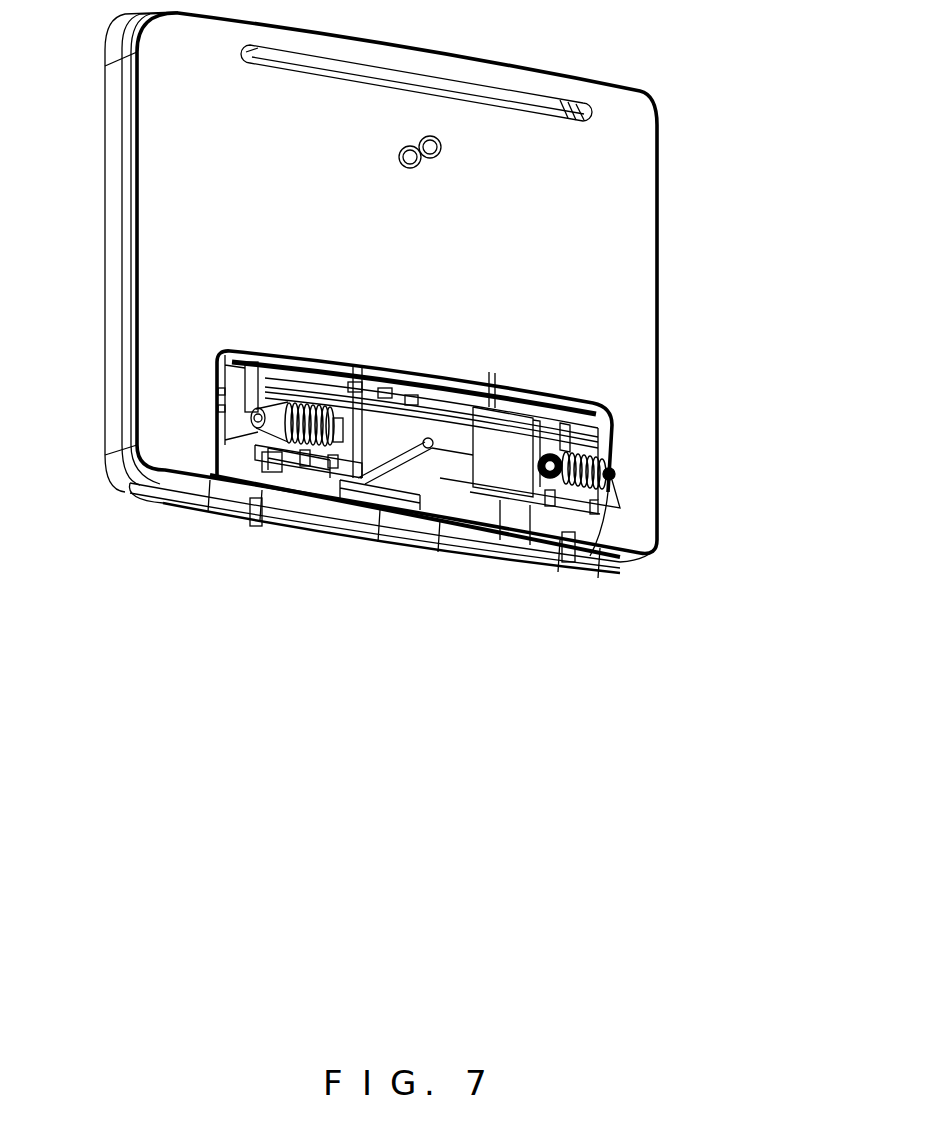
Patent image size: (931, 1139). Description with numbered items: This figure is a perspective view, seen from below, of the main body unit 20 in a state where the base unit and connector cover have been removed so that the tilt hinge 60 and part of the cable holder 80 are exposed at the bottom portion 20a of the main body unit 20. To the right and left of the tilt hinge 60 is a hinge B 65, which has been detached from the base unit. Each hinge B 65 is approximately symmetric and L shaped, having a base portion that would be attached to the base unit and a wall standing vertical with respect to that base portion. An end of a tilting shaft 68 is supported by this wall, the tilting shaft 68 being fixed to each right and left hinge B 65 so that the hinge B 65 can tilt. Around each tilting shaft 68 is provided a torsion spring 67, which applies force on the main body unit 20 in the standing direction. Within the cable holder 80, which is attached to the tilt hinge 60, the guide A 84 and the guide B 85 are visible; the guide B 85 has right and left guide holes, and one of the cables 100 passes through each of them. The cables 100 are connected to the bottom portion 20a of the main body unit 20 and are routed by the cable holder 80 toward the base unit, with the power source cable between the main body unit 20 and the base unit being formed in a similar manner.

The main body unit 20 is at (670, 90).
The bottom portion 20a is at (345, 530).
The tilt hinge 60 is at (620, 496).
The hinge B 65 is at (255, 528).
The torsion spring 67 is at (298, 405).
The tilting shaft 68 is at (220, 427).
The cable holder 80 is at (513, 443).
The guide A 84 is at (300, 530).
The guide B 85 is at (382, 530).
The cables 100 is at (431, 440).